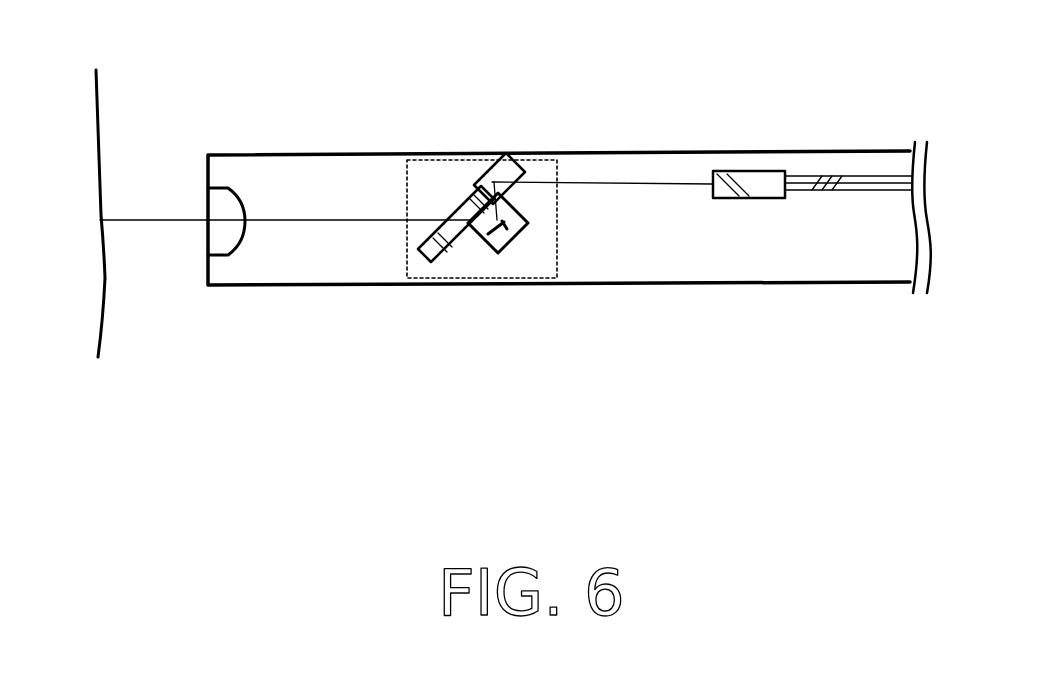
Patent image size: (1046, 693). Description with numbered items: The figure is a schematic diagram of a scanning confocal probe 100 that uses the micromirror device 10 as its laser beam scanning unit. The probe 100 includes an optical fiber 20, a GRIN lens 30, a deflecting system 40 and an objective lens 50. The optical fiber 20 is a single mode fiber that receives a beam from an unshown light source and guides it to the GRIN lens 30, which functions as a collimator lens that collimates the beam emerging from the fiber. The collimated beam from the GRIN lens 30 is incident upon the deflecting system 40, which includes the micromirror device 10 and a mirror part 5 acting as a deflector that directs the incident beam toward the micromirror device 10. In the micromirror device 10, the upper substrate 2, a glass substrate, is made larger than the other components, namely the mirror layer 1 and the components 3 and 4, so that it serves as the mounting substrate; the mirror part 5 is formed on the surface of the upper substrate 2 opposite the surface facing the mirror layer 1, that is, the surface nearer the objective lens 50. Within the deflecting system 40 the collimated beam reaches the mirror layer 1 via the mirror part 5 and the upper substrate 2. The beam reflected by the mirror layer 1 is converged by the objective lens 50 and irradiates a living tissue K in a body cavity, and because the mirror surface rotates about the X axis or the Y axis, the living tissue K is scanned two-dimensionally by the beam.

The scanning confocal probe 100 is at (608, 86).
The living tissue K is at (108, 278).
The objective lens 50 is at (233, 208).
The deflecting system 40 is at (545, 246).
The micromirror device 10 is at (565, 243).
The upper substrate 2 is at (442, 256).
The mirror part 5 is at (475, 183).
The mirror layer 1 is at (528, 264).
The component of the micromirror device 3 is at (528, 264).
The component of the micromirror device 4 is at (597, 332).
The GRIN lens 30 is at (750, 170).
The optical fiber 20 is at (860, 175).